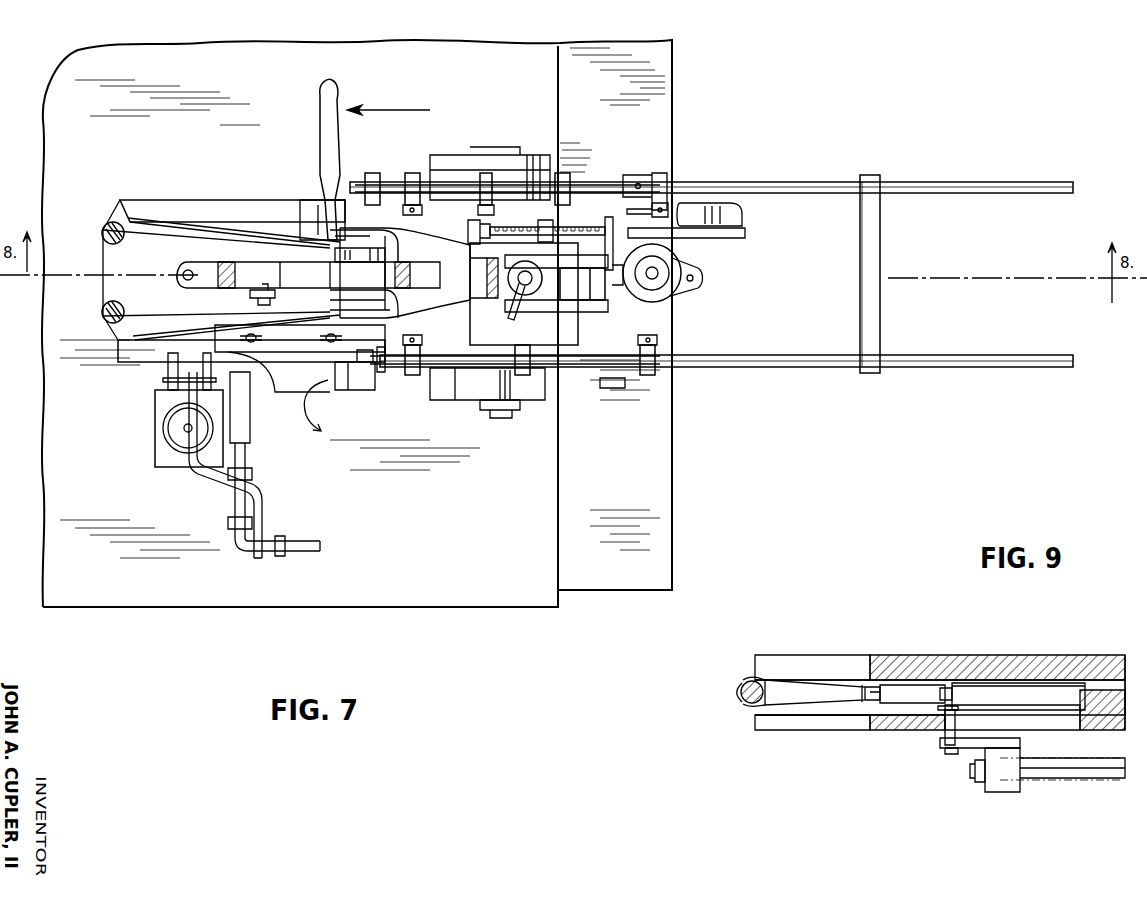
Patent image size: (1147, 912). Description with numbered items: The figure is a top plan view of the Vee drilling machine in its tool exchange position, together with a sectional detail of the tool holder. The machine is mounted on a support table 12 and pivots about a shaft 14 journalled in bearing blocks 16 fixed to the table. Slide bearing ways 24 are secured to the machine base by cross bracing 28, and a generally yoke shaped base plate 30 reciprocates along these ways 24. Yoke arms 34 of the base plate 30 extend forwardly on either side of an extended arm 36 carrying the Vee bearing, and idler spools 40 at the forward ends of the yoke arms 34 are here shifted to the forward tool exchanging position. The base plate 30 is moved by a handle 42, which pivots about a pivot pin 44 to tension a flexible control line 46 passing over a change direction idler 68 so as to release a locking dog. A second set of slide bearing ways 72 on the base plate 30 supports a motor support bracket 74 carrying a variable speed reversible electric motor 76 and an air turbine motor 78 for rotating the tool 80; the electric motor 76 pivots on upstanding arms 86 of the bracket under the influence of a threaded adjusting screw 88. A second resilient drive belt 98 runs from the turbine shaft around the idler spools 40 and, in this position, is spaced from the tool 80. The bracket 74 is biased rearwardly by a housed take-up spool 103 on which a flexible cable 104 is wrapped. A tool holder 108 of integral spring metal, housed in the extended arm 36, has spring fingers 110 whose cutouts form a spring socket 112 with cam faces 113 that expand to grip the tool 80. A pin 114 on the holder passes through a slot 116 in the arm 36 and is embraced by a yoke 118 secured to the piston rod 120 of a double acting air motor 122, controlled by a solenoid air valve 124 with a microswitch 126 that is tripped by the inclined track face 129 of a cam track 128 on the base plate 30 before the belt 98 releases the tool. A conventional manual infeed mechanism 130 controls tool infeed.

In FIG. 7, the support table 12 is at (474, 542).
In FIG. 7, the shaft 14 is at (500, 410).
In FIG. 7, the bearing blocks 16 is at (520, 155).
In FIG. 7, the slide bearing ways 24 is at (950, 368).
In FIG. 7, the cross bracing 28 is at (612, 382).
In FIG. 7, the base plate 30 is at (448, 243).
In FIG. 7, the yoke arms 34 is at (187, 200).
In FIG. 7, the extended arm 36 is at (251, 268).
In FIG. 9, the extended arm 36 is at (905, 666).
In FIG. 7, the idler spools 40 is at (104, 230).
In FIG. 7, the handle 42 is at (322, 100).
In FIG. 7, the pivot pin 44 is at (316, 216).
In FIG. 7, the flexible control line 46 is at (366, 238).
In FIG. 7, the change direction idler 68 is at (370, 256).
In FIG. 7, the slide bearing ways 72 is at (800, 182).
In FIG. 7, the motor support bracket 74 is at (562, 335).
In FIG. 7, the electric motor 76 is at (672, 296).
In FIG. 7, the air turbine motor 78 is at (508, 300).
In FIG. 7, the tool 80 is at (175, 270).
In FIG. 7, the upstanding arms 86 is at (574, 308).
In FIG. 7, the threaded adjusting screw 88 is at (588, 226).
In FIG. 7, the second resilient drive belt 98 is at (100, 260).
In FIG. 7, the take-up spool 103 is at (746, 214).
In FIG. 7, the flexible cable 104 is at (622, 194).
In FIG. 9, the tool holder 108 is at (829, 722).
In FIG. 9, the spring fingers 110 is at (804, 654).
In FIG. 9, the spring socket 112 is at (740, 694).
In FIG. 9, the cam faces 113 is at (740, 682).
In FIG. 9, the pin 114 is at (948, 722).
In FIG. 9, the slot 116 is at (1026, 720).
In FIG. 7, the yoke 118 is at (250, 296).
In FIG. 9, the yoke 118 is at (972, 748).
In FIG. 9, the piston rod 120 is at (1072, 773).
In FIG. 7, the double acting reciprocal air motor 122 is at (380, 304).
In FIG. 7, the solenoid air valve 124 is at (364, 392).
In FIG. 7, the microswitch 126 is at (386, 371).
In FIG. 7, the cam track 128 is at (310, 354).
In FIG. 7, the inclined track face 129 is at (295, 405).
In FIG. 7, the manual infeed mechanism 130 is at (165, 483).